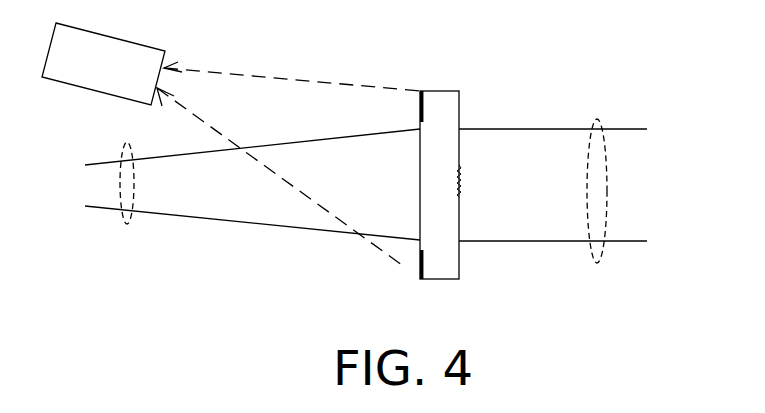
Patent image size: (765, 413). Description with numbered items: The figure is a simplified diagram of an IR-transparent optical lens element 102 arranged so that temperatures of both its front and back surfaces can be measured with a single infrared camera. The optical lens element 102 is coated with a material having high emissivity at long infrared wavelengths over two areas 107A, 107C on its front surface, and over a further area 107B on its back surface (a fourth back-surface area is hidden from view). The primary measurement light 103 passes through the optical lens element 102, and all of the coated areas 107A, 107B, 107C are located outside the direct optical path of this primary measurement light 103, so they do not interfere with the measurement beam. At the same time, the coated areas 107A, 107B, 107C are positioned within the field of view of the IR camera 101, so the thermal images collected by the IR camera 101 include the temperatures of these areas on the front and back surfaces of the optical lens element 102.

The IR camera 101 is at (92, 74).
The optical lens element 102 is at (440, 90).
The primary measurement light 103 is at (127, 227).
The high-emissivity coated area 107A is at (420, 105).
The high-emissivity coated area 107B is at (460, 184).
The high-emissivity coated area 107C is at (418, 268).